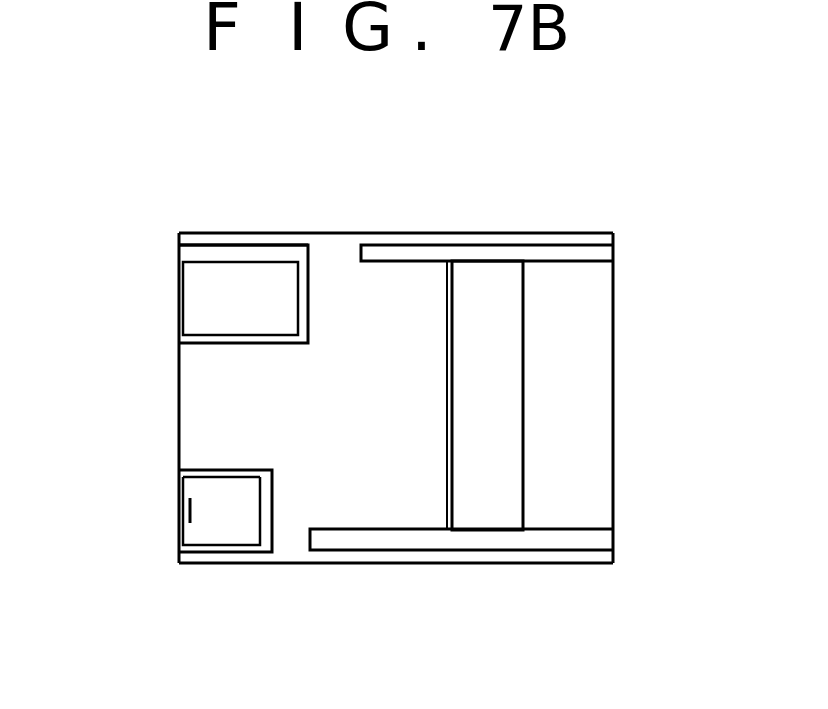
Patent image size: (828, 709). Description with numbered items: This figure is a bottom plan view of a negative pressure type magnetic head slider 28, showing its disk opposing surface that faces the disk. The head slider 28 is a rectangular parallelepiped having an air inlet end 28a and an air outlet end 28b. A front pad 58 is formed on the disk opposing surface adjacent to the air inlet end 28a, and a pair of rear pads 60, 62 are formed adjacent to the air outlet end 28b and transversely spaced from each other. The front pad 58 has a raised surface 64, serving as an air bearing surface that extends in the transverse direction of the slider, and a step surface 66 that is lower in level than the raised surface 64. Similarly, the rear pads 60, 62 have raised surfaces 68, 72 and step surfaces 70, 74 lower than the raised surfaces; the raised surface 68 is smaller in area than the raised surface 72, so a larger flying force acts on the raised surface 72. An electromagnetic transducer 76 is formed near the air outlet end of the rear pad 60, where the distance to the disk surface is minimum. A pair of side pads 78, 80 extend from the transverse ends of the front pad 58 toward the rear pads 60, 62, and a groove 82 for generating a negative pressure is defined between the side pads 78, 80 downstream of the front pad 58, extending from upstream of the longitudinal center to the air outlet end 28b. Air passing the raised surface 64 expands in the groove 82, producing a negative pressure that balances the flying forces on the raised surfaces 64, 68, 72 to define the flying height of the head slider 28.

The negative pressure type magnetic head slider 28 is at (542, 232).
The air inlet end 28a is at (614, 298).
The air outlet end 28b is at (177, 400).
The front pad 58 is at (590, 398).
The rear pad 60 is at (215, 550).
The rear pad 62 is at (232, 245).
The raised surface 64 is at (488, 520).
The step surface 66 is at (553, 470).
The raised surface 68 is at (222, 484).
The step surface 70 is at (268, 498).
The raised surface 72 is at (200, 297).
The step surface 74 is at (309, 302).
The electromagnetic transducer 76 is at (182, 513).
The side pad 78 is at (373, 545).
The side pad 80 is at (387, 245).
The groove 82 is at (375, 408).